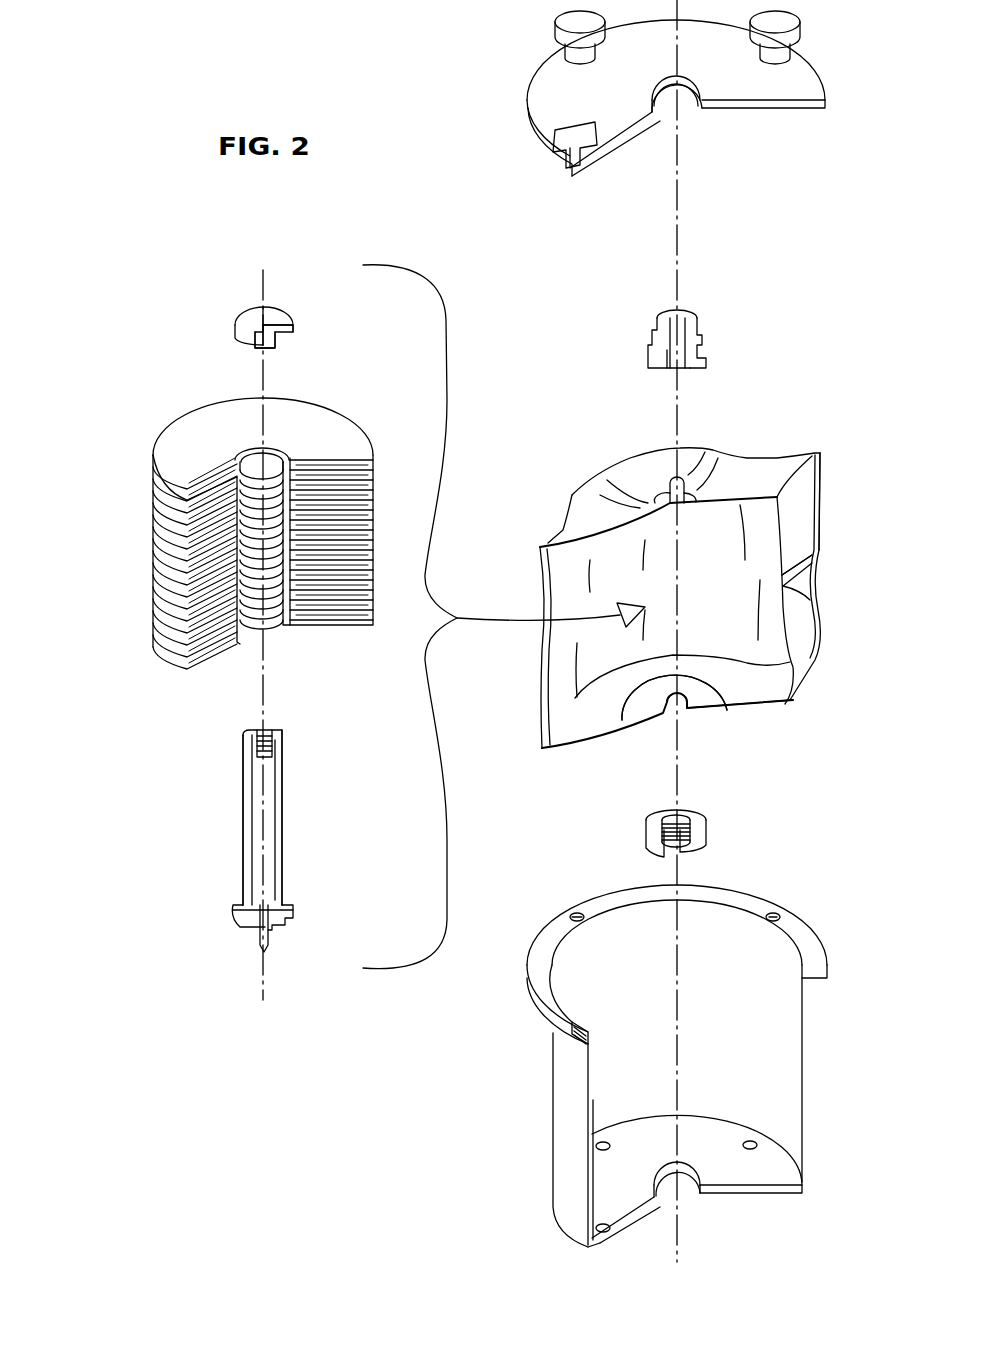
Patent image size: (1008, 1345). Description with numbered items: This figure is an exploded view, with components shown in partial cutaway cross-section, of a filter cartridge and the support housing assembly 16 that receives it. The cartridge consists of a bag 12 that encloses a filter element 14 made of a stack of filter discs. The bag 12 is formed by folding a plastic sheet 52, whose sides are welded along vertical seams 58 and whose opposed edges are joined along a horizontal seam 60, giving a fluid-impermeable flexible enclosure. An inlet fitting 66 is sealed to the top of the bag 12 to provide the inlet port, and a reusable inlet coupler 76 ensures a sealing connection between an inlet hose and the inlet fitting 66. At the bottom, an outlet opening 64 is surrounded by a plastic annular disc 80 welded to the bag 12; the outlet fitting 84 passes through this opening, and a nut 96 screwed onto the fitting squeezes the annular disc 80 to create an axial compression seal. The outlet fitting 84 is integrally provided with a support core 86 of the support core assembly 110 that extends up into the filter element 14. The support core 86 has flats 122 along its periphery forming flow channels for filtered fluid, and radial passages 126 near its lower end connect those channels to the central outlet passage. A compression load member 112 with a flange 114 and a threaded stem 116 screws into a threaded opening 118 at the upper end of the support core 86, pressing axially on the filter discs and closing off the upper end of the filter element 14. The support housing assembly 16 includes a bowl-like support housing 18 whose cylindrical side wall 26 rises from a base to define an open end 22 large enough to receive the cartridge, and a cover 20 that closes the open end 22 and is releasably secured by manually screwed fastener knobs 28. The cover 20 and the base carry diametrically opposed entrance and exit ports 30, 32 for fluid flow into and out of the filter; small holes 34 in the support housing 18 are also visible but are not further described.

The bag 12 is at (585, 473).
The filter element 14 is at (168, 402).
The support housing assembly 16 is at (616, 1047).
The support housing 18 is at (650, 1047).
The cover 20 is at (548, 85).
The open end 22 is at (627, 924).
The cylindrical side wall 26 is at (803, 1033).
The fastener knobs 28 is at (565, 22).
The entrance port 30 is at (687, 115).
The exit port 32 is at (683, 1197).
The hole 34 is at (603, 1140).
The plastic sheet 52 is at (778, 697).
The vertical seams 58 is at (820, 487).
The horizontal seam 60 is at (810, 598).
The outlet opening 64 is at (682, 710).
The inlet fitting 66 is at (672, 485).
The reusable inlet coupler 76 is at (650, 328).
The plastic annular disc 80 is at (708, 698).
The outlet fitting 84 is at (272, 945).
The support core 86 is at (277, 813).
The nut 96 is at (707, 843).
The pin 110 is at (234, 827).
The compression load member 112 is at (250, 318).
The flange 114 is at (292, 322).
The threaded stem 116 is at (275, 350).
The threaded opening 118 is at (252, 730).
The flats 122 is at (273, 730).
The radial passages 126 is at (250, 895).